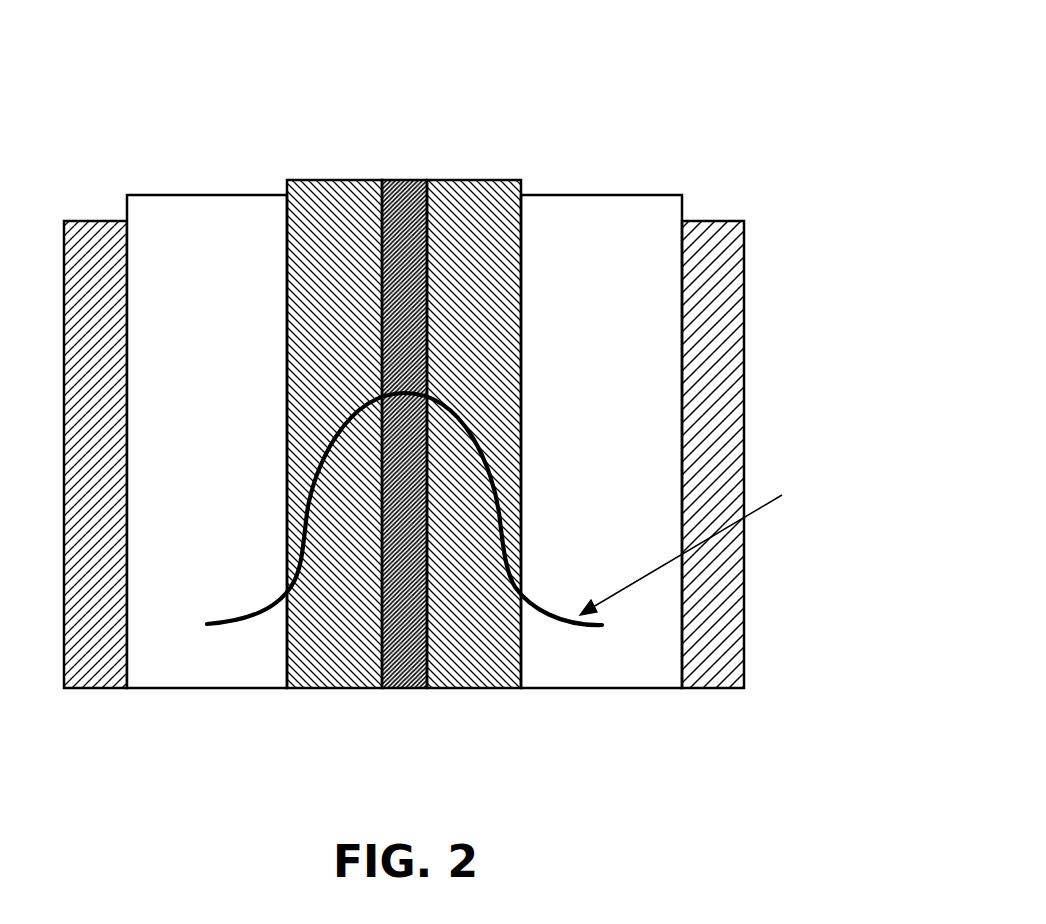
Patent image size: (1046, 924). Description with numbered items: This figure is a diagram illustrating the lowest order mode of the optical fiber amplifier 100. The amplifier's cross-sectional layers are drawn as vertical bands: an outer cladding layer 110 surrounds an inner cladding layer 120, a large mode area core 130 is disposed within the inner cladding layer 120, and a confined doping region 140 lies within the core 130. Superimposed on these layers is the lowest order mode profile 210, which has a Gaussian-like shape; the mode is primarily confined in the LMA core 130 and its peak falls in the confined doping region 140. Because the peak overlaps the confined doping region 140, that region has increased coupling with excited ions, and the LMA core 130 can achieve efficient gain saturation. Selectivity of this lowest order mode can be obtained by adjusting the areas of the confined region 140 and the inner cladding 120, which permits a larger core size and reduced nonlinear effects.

The optical fiber amplifier 100 is at (672, 88).
The outer cladding layer 110 is at (90, 221).
The inner cladding layer 120 is at (208, 195).
The large mode area (LMA) core 130 is at (303, 180).
The confined doping region 140 is at (395, 180).
The lowest order mode profile 210 is at (577, 627).